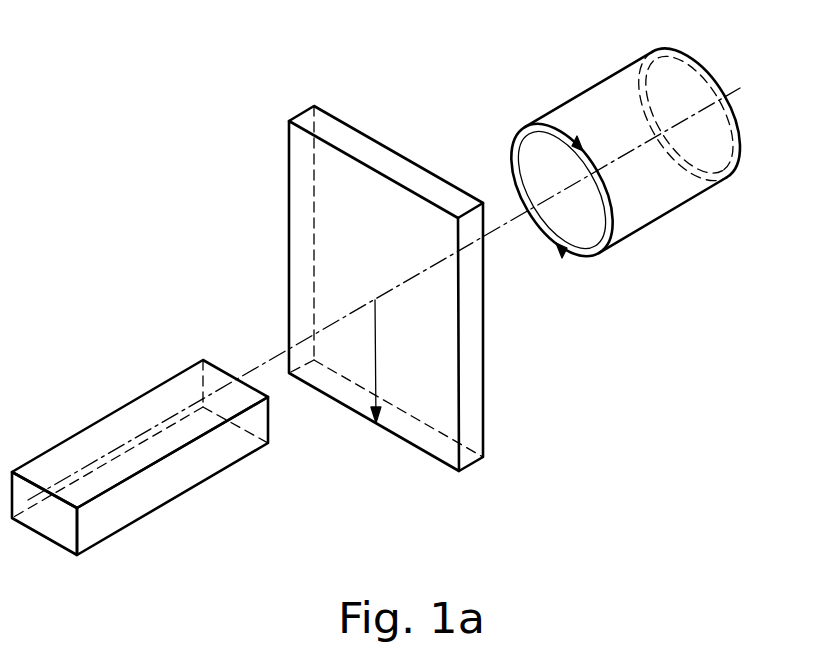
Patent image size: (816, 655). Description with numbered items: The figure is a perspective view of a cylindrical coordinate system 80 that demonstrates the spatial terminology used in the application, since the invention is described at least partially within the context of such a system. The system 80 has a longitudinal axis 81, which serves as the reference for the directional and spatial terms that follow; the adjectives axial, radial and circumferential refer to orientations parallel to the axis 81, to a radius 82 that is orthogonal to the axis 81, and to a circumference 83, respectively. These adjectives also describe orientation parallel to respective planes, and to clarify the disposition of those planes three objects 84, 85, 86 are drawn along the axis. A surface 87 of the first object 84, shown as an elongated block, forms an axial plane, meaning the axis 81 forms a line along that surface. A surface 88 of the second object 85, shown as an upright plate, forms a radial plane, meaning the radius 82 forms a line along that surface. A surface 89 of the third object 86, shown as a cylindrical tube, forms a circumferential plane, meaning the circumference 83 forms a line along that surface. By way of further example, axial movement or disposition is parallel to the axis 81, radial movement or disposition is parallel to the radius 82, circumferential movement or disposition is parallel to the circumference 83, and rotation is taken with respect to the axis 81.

The cylindrical coordinate system 80 is at (233, 152).
The longitudinal axis 81 is at (730, 98).
The radius 82 is at (376, 352).
The circumference 83 is at (509, 152).
The object 84 is at (105, 540).
The object 85 is at (503, 463).
The object 86 is at (658, 235).
The surface 87 is at (100, 437).
The surface 88 is at (305, 244).
The surface 89 is at (592, 88).